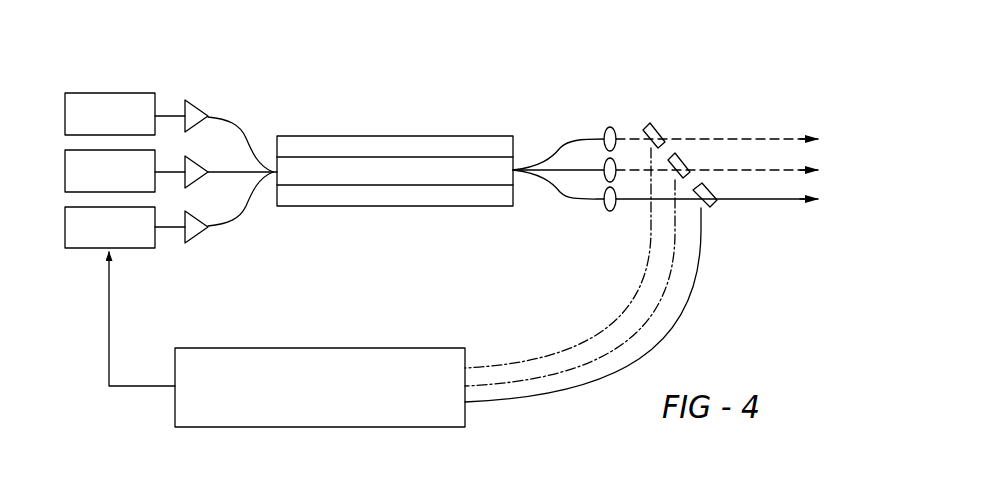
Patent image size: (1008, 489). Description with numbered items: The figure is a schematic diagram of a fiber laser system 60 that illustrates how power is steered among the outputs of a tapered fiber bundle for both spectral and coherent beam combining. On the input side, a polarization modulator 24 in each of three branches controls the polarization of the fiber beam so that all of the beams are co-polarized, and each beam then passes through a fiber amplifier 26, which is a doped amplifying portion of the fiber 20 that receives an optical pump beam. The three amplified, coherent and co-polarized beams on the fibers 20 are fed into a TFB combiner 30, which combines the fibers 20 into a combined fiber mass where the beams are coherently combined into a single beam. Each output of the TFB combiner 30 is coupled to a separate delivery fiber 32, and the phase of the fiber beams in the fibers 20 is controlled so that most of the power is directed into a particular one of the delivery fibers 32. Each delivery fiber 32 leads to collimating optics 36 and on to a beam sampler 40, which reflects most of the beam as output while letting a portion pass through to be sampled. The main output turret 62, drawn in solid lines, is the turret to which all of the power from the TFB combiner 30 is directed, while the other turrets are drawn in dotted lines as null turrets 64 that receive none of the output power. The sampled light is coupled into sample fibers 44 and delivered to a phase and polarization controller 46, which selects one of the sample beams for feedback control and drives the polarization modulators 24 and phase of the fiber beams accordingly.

The fibers 20 is at (237, 123).
The polarization modulator 24 is at (120, 93).
The fiber amplifier 26 is at (209, 112).
The TFB combiner 30 is at (360, 136).
The delivery fibers 32 is at (580, 138).
The collimating optics 36 is at (608, 209).
The beam sampler 40 is at (644, 127).
The sample fibers 44 is at (701, 266).
The phase and polarization controller 46 is at (433, 427).
The fiber laser system 60 is at (785, 101).
The main output turret 62 is at (778, 222).
The null turrets 64 is at (693, 127).